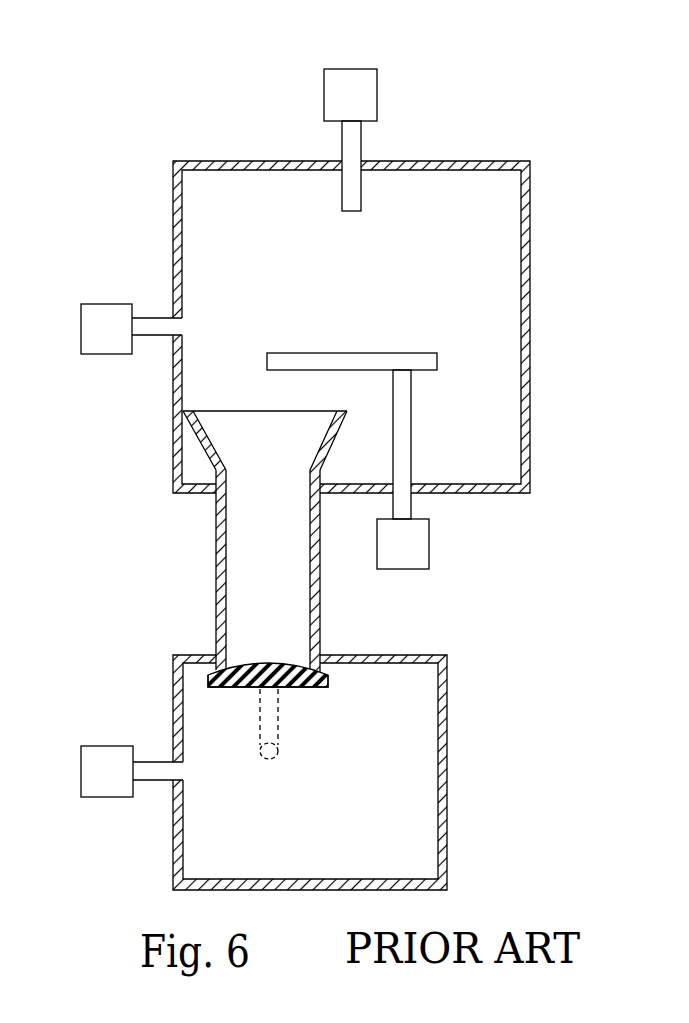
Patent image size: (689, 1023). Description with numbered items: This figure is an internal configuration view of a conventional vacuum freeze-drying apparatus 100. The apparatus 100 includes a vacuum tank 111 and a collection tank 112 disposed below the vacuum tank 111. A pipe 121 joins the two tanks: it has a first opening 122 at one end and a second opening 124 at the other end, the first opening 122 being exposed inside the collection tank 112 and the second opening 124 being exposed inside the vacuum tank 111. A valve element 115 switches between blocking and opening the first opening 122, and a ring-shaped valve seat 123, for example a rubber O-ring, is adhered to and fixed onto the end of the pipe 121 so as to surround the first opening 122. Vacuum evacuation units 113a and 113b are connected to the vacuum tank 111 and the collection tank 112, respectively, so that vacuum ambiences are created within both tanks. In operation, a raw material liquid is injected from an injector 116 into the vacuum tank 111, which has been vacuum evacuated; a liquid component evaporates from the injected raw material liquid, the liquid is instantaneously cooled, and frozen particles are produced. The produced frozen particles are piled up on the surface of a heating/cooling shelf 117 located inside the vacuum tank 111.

The vacuum freeze-drying apparatus 100 is at (106, 46).
The vacuum tank 111 is at (173, 195).
The collection tank 112 is at (173, 713).
The vacuum evacuation unit 113a is at (103, 317).
The vacuum evacuation unit 113b is at (100, 800).
The valve element 115 is at (228, 690).
The injector 116 is at (355, 190).
The heating/cooling shelf 117 is at (399, 360).
The pipe 121 is at (216, 565).
The first opening 122 is at (296, 661).
The valve seat 123 is at (217, 675).
The second opening 124 is at (228, 409).